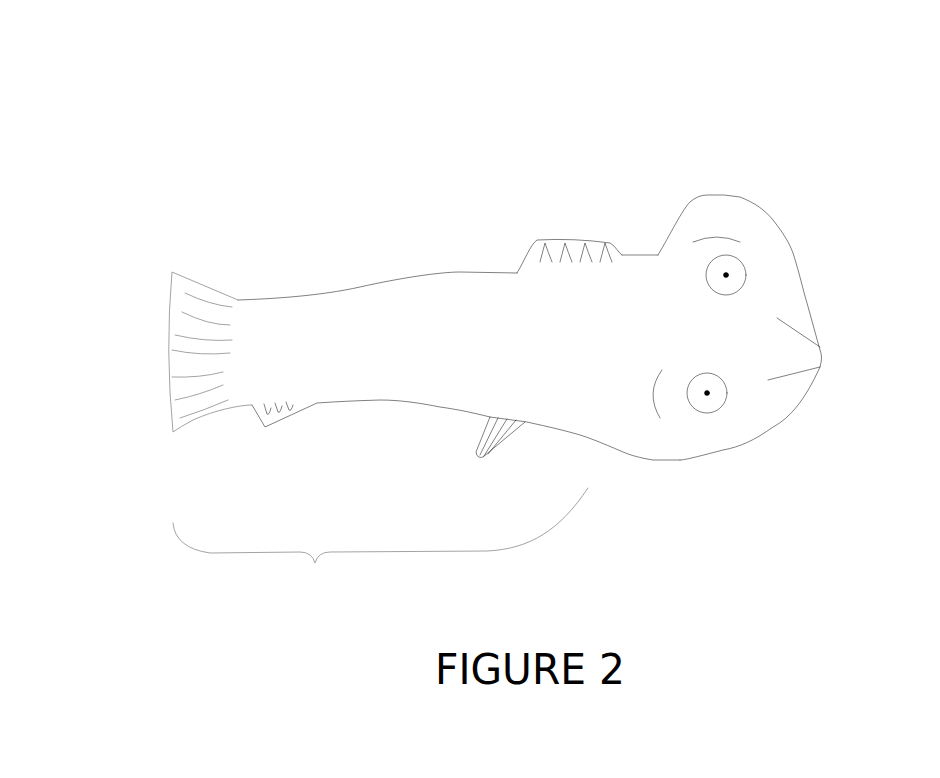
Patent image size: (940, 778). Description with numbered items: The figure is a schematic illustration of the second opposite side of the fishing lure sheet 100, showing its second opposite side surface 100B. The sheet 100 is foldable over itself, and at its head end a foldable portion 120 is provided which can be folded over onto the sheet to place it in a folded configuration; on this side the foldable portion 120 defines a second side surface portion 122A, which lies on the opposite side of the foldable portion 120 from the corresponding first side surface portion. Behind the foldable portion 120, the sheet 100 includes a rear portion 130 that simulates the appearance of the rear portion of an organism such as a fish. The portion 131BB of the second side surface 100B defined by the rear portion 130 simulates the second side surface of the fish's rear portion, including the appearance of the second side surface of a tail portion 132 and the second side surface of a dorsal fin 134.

The fishing lure sheet 100 is at (648, 135).
The second opposite side surface 100B is at (518, 354).
The foldable portion 120 is at (737, 222).
The second side surface portion 122A is at (768, 277).
The rear portion 130 is at (380, 547).
The portion of the second side surface 131BB is at (387, 307).
The tail portion 132 is at (212, 288).
The dorsal fin 134 is at (572, 242).